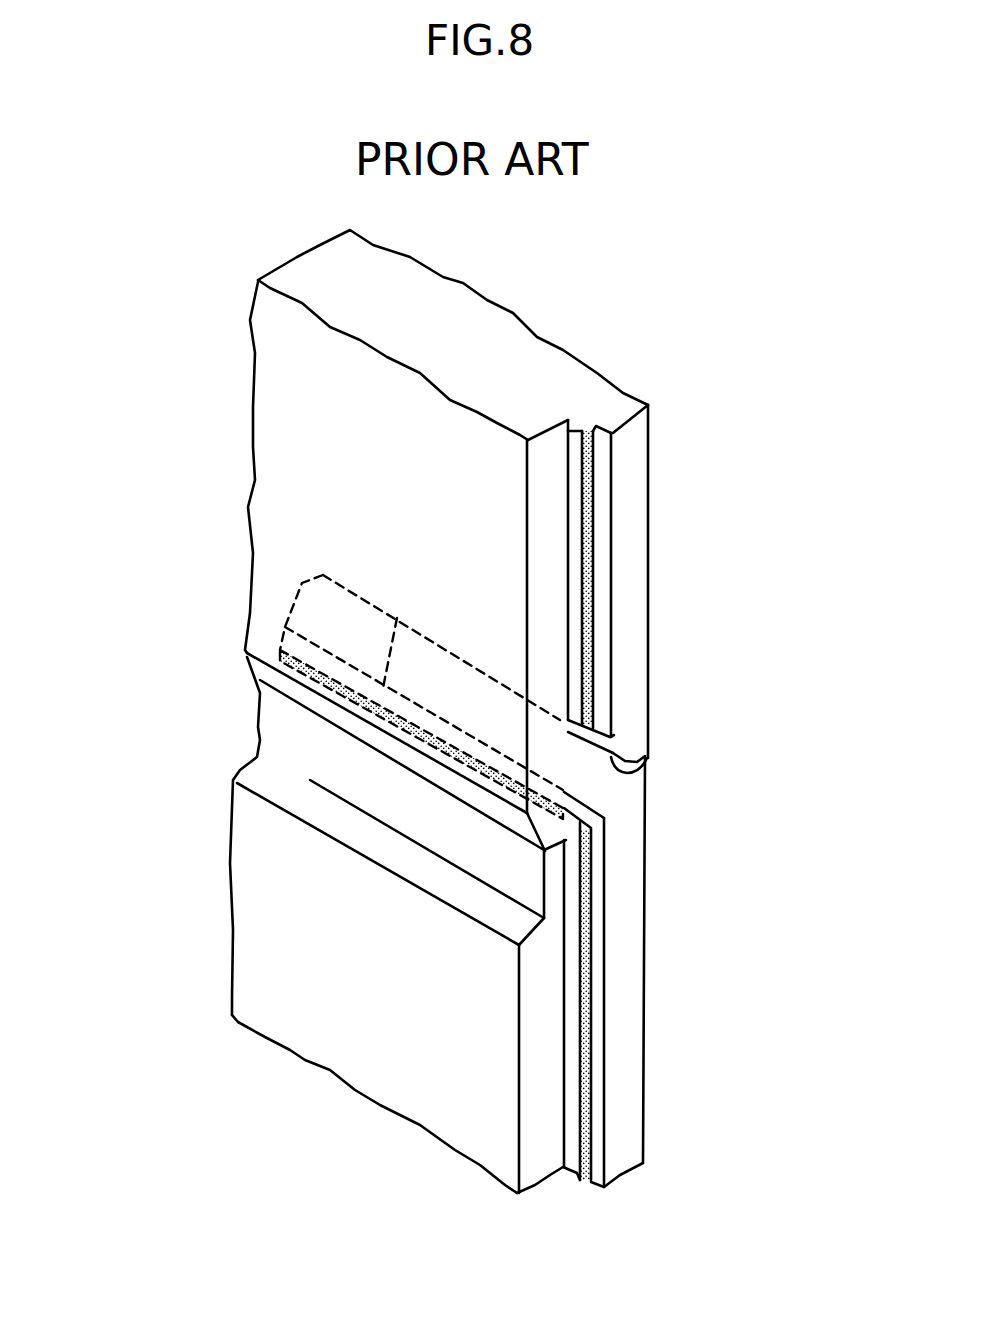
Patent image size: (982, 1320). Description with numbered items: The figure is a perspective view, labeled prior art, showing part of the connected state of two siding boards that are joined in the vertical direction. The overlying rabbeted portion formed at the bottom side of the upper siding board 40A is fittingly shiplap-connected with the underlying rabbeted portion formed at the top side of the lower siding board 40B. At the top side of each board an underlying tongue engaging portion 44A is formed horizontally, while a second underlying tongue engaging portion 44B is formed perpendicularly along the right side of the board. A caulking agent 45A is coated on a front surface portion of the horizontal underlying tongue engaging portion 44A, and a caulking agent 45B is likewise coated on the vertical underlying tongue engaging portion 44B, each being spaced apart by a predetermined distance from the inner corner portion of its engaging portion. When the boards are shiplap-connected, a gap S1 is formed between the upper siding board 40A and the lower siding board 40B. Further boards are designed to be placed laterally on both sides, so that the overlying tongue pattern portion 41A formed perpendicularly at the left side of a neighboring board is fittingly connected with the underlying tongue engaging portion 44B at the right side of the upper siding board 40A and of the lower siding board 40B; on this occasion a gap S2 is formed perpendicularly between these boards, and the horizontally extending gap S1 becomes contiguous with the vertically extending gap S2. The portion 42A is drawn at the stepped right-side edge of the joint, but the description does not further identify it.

The upper siding board 40A is at (238, 472).
The lower siding board 40B is at (215, 983).
The overlying tongue pattern portion 41A is at (320, 717).
The stepped shoulder 42A is at (627, 777).
The underlying tongue engaging portion 44A is at (598, 778).
The underlying tongue engaging portion 44B is at (632, 468).
The caulking agent 45A is at (397, 616).
The caulking agent 45B is at (593, 557).
The gap S1 is at (463, 778).
The gap S2 is at (573, 627).